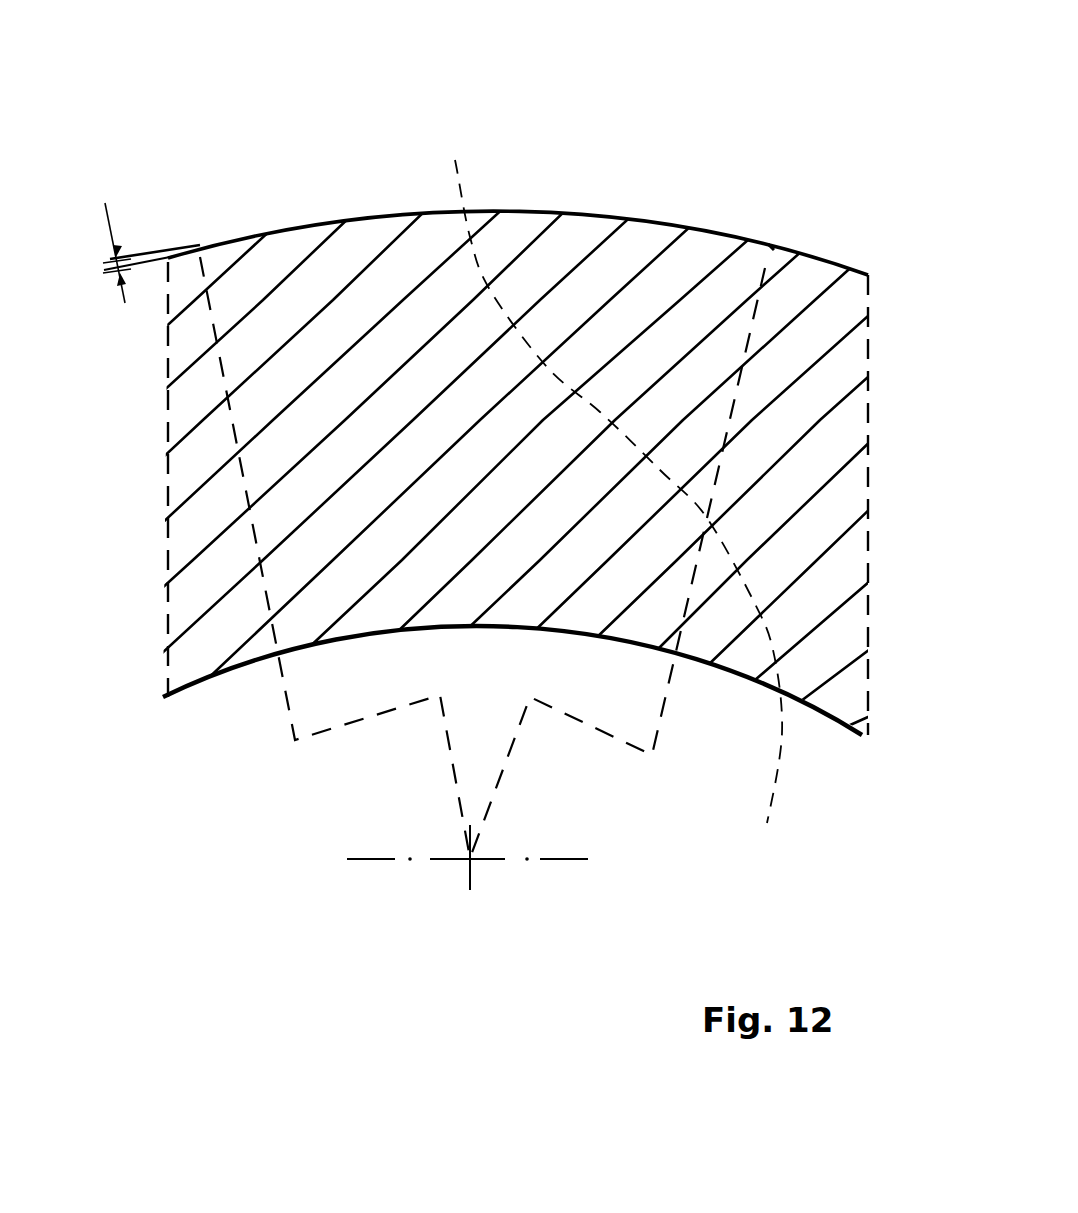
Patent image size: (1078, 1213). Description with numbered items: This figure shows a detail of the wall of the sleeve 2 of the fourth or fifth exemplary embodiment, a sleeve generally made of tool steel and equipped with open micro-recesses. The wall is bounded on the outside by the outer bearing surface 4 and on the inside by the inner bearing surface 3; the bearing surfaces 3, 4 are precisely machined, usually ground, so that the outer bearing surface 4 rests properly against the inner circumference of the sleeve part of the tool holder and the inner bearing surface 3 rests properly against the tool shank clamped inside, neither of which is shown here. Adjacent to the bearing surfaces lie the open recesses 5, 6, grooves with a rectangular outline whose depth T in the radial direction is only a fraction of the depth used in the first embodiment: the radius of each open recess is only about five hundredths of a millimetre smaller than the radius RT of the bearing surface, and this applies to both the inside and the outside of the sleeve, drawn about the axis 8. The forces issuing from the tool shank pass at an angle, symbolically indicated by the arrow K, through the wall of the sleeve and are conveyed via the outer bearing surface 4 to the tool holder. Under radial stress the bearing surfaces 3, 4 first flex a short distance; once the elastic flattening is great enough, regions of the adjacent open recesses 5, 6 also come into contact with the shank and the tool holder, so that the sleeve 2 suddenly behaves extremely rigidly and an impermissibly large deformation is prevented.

The sleeve 2 is at (690, 130).
The inner bearing surface 3 is at (210, 678).
The outer bearing surface 4 is at (331, 220).
The open recess 5 is at (358, 643).
The open recess 6 is at (183, 250).
The axis of rotation 8 is at (462, 852).
The arrow K is at (440, 160).
The radius of the bearing surface RT is at (498, 557).
The depth of the open recess T is at (112, 225).